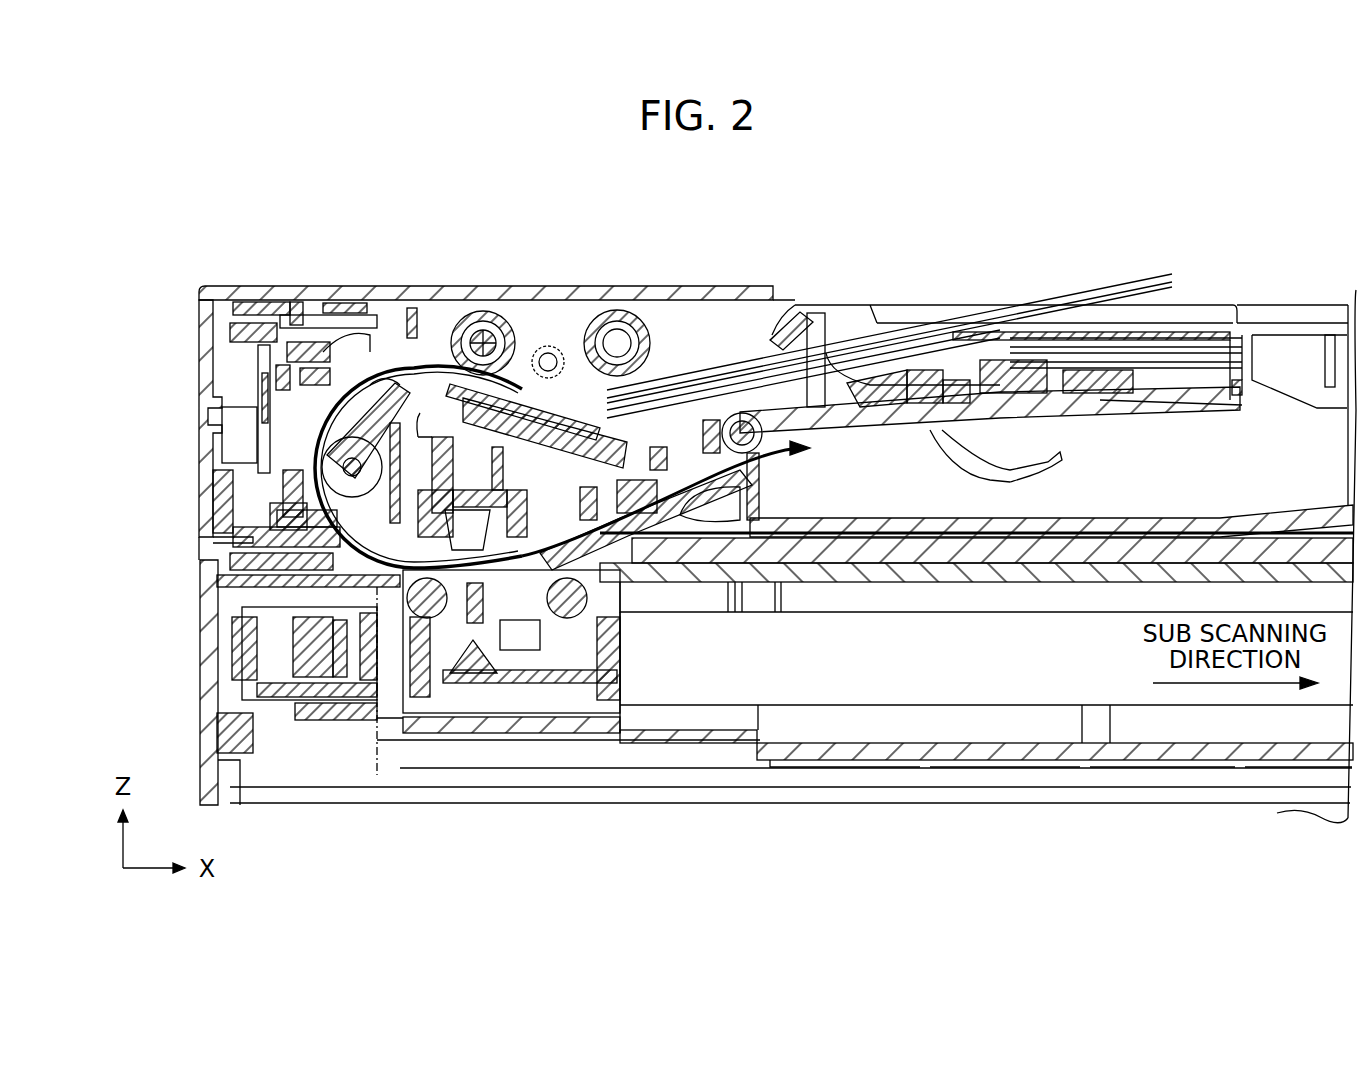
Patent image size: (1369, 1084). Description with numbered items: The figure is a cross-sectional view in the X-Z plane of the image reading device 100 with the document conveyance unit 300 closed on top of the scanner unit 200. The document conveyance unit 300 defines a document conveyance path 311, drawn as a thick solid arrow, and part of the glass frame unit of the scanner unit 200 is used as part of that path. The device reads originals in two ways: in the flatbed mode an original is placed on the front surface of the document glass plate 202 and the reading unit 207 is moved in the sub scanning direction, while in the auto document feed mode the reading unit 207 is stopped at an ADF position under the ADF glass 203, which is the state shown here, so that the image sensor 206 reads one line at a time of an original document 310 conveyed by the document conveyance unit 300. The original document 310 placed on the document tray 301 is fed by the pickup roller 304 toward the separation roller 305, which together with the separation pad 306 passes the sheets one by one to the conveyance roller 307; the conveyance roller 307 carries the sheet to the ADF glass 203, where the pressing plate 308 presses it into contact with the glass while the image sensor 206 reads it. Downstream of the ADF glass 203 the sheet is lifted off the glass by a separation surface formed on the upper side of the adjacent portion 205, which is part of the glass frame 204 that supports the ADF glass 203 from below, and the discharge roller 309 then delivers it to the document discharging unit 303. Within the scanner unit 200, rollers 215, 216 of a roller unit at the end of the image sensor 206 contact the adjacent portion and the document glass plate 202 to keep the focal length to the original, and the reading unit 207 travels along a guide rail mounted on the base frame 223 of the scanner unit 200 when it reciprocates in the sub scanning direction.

The image reading device 100 is at (170, 418).
The scanner unit 200 is at (1163, 723).
The document glass plate 202 is at (793, 582).
The ADF glass 203 is at (417, 573).
The glass frame 204 is at (260, 592).
The adjacent portion 205 is at (562, 560).
The image sensor 206 is at (527, 630).
The reading unit 207 is at (480, 687).
The roller 215 is at (440, 580).
The roller 216 is at (567, 600).
The base frame 223 is at (208, 583).
The document conveyance unit 300 is at (1292, 357).
The document tray 301 is at (952, 355).
The document discharging unit 303 is at (950, 500).
The pickup roller 304 is at (628, 323).
The separation roller 305 is at (483, 322).
The separation pad 306 is at (548, 412).
The conveyance roller 307 is at (360, 452).
The pressing plate 308 is at (473, 553).
The discharge roller 309 is at (740, 443).
The original document 310 is at (1172, 272).
The document conveyance path 311 is at (323, 417).